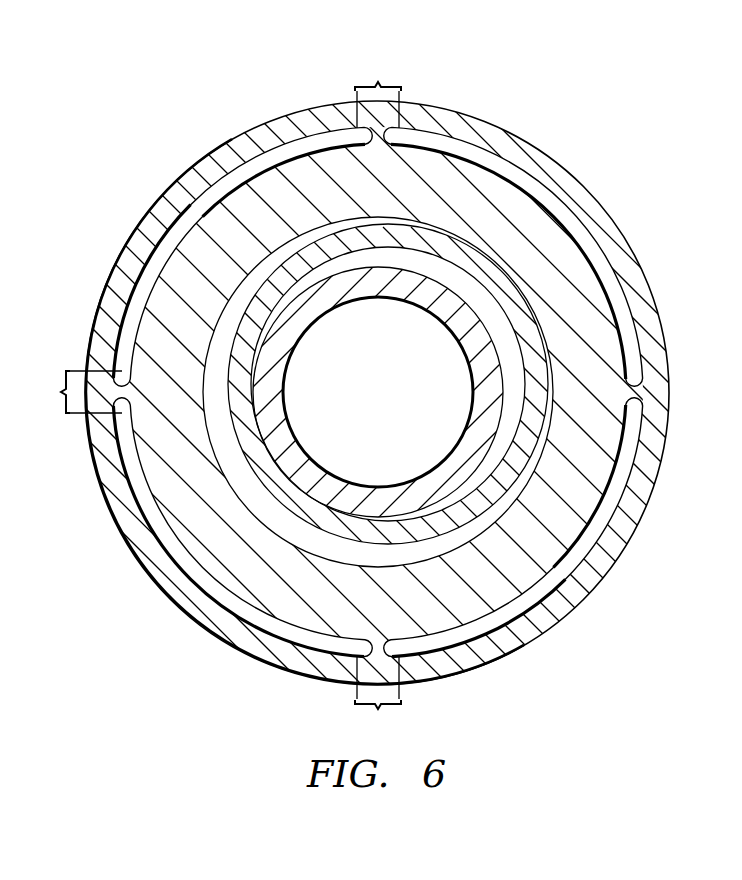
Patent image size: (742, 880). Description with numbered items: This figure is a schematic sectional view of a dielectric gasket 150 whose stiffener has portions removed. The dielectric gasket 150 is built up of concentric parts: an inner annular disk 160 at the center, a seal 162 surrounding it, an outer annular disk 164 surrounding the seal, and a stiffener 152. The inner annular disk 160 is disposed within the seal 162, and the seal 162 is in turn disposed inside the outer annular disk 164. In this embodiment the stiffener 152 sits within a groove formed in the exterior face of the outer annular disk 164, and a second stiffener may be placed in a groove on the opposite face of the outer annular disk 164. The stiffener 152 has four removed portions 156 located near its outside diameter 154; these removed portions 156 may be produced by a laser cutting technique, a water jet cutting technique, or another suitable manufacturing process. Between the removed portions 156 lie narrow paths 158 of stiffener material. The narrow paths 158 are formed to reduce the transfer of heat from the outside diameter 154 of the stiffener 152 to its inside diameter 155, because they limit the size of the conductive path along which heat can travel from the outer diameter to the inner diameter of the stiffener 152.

The dielectric gasket 150 is at (371, 394).
The stiffener 152 is at (573, 405).
The outside diameter 154 is at (670, 392).
The inside diameter 155 is at (518, 518).
The removed portions 156 is at (152, 272).
The narrow paths 158 is at (209, 394).
The inner annular disk 160 is at (448, 469).
The seal 162 is at (273, 309).
The outer annular disk 164 is at (527, 353).